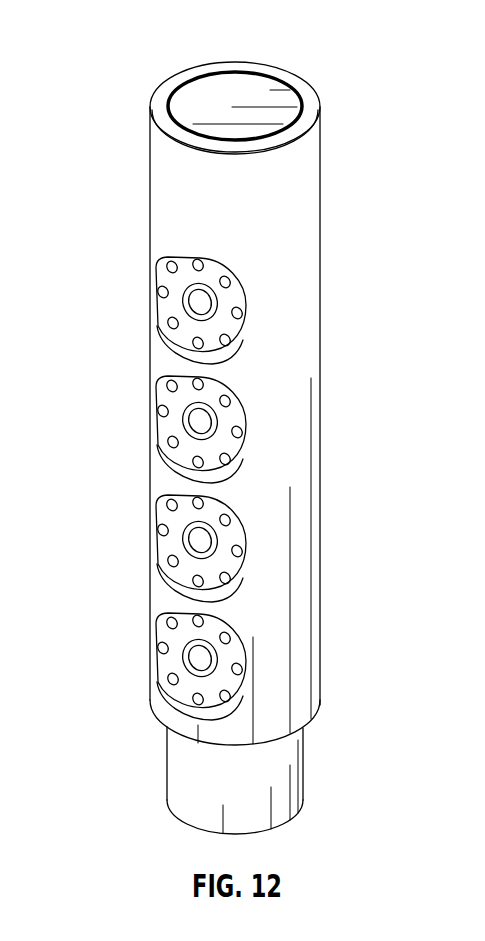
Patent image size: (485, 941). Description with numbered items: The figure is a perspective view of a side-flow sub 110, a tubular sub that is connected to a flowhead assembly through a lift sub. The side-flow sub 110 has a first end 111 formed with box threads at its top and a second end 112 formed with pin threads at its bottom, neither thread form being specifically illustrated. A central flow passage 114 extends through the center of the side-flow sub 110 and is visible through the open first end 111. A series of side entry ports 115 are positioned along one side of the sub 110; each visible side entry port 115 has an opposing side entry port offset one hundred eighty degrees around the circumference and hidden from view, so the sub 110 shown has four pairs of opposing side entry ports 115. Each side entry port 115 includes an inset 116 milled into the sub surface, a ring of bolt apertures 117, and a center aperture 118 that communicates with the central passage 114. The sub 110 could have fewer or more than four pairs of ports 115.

The side-flow sub 110 is at (352, 425).
The first end 111 is at (277, 100).
The second end 112 is at (304, 770).
The central flow passage 114 is at (203, 97).
The side entry port 115 is at (219, 346).
The inset 116 is at (264, 303).
The bolt apertures 117 is at (264, 320).
The center aperture 118 is at (275, 266).